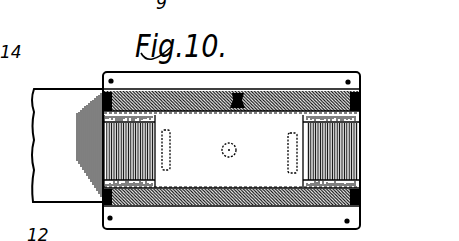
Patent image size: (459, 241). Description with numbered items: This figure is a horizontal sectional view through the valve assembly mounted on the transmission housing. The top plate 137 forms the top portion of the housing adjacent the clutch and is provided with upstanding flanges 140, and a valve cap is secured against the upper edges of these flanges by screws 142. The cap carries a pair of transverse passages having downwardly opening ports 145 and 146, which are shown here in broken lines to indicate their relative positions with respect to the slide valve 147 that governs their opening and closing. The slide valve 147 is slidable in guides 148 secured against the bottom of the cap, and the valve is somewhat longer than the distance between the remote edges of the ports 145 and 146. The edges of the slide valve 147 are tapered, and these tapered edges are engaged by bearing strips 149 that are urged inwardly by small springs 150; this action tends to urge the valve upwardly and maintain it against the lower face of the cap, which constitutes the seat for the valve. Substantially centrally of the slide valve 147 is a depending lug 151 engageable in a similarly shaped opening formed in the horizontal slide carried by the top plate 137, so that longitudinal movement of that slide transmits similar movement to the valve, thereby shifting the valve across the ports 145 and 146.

The top plate 137 is at (67, 145).
The upstanding flanges 140 is at (122, 72).
The screws 142 is at (350, 81).
The port 145 is at (172, 146).
The port 146 is at (288, 139).
The slide valve 147 is at (229, 151).
The guides 148 is at (362, 124).
The bearing strips 149 is at (268, 100).
The small springs 150 is at (247, 100).
The depending lug 151 is at (226, 157).